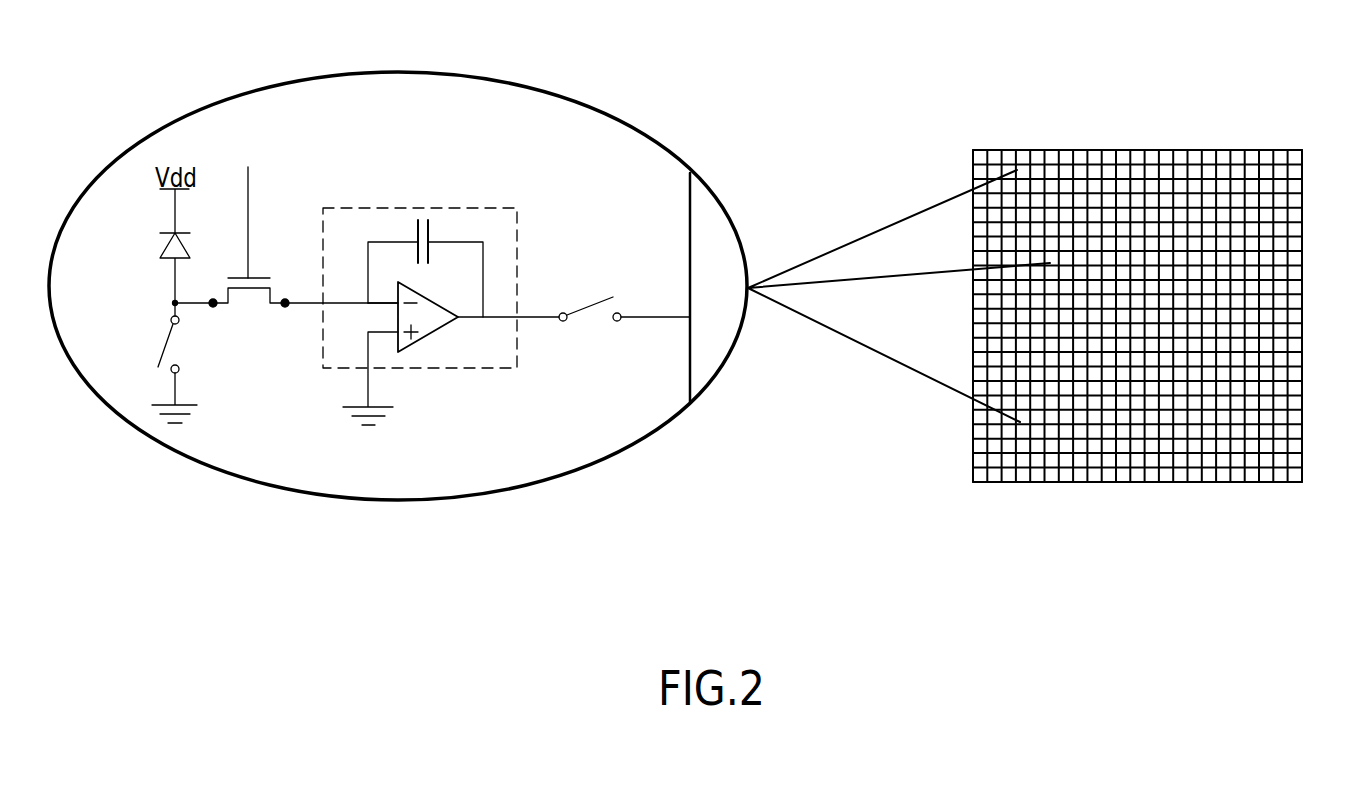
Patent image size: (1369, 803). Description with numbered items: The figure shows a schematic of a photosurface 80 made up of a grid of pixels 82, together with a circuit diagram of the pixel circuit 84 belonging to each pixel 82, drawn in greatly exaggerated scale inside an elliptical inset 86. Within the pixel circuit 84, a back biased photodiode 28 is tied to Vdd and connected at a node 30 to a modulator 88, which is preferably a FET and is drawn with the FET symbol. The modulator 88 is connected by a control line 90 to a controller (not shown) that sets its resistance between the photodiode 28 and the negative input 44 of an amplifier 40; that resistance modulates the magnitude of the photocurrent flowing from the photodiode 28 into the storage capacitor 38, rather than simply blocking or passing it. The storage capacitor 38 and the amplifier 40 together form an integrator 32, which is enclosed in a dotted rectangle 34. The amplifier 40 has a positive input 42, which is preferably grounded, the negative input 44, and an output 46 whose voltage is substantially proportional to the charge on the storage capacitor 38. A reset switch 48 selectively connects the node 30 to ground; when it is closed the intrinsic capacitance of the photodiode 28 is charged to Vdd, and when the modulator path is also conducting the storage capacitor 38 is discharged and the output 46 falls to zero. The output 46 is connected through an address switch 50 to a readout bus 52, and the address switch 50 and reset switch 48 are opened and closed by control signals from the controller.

The photodiode 28 is at (165, 246).
The node 30 is at (178, 305).
The integrator 32 is at (442, 222).
The dotted rectangle 34 is at (474, 204).
The storage capacitor 38 is at (416, 226).
The amplifier 40 is at (427, 320).
The positive input 42 is at (394, 334).
The negative input 44 is at (392, 305).
The output 46 is at (458, 319).
The reset switch 48 is at (167, 344).
The address switch 50 is at (594, 311).
The readout bus 52 is at (688, 245).
The photosurface 80 is at (1235, 103).
The pixels 82 is at (1182, 160).
The pixel circuit 84 is at (415, 130).
The inset 86 is at (625, 110).
The modulator 88 is at (232, 280).
The control line 90 is at (250, 212).